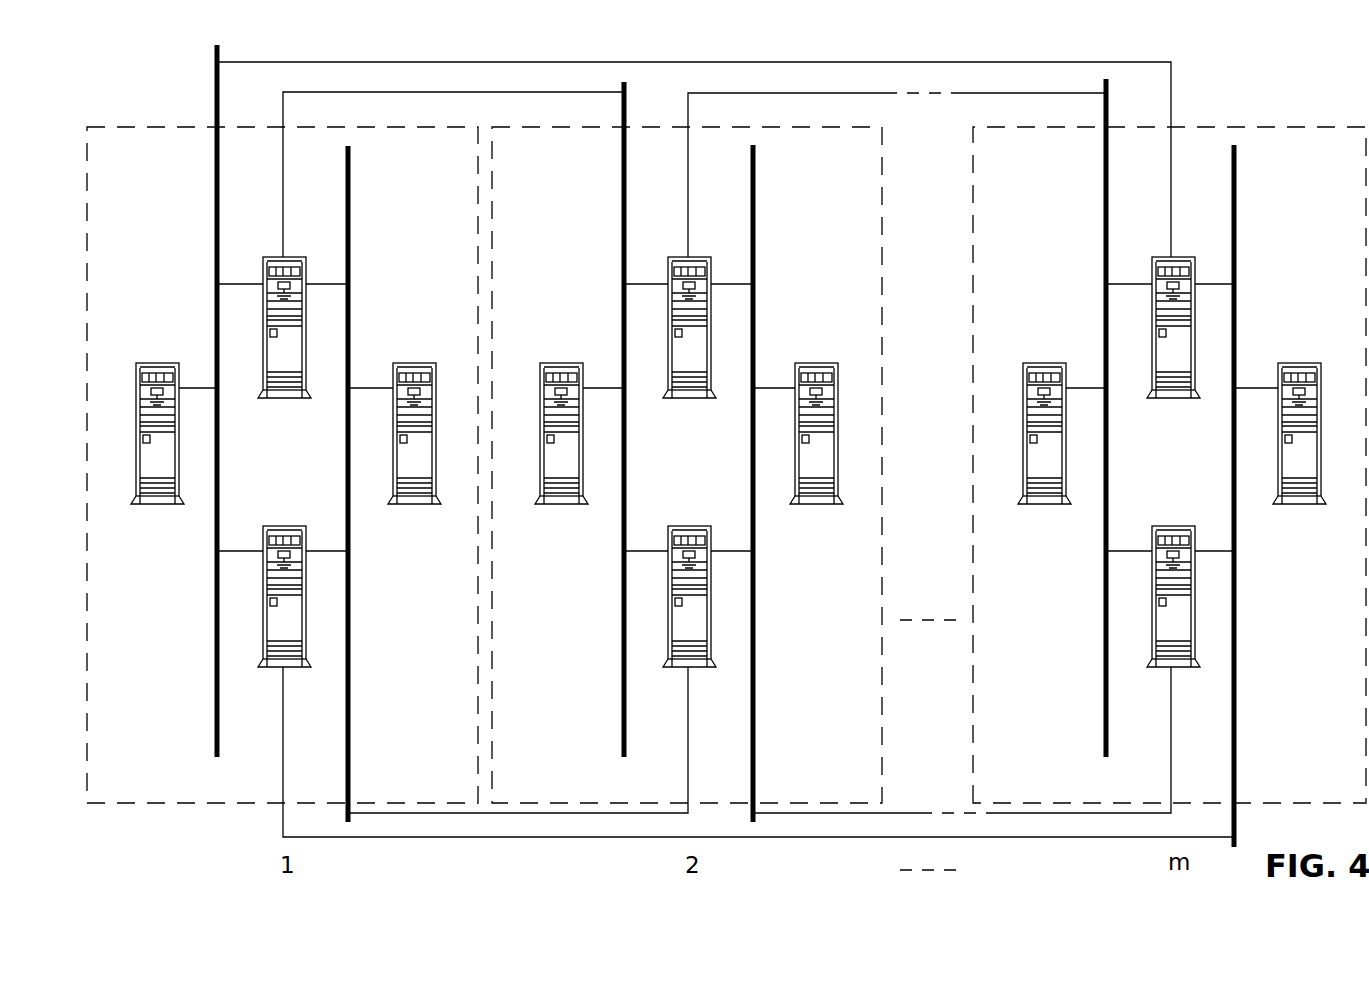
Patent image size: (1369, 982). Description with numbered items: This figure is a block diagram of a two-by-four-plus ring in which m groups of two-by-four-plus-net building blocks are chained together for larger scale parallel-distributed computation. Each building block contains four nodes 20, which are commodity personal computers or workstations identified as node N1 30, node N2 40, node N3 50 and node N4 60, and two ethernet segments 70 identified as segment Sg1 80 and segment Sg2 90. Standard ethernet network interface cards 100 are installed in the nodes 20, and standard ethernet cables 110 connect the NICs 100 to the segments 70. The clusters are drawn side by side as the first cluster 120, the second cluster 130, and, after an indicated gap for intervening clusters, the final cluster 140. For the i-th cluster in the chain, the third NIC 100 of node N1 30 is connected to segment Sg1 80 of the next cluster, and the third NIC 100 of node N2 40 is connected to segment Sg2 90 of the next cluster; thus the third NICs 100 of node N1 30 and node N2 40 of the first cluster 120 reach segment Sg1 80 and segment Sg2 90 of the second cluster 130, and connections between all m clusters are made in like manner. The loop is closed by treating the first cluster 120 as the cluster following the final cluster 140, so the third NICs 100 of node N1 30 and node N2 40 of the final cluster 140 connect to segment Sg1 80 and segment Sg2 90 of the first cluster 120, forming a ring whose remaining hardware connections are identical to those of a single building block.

The node 20 is at (730, 454).
The node N1 30 is at (277, 256).
The node N2 40 is at (262, 670).
The node N3 50 is at (136, 427).
The node N4 60 is at (436, 425).
The ethernet segment 70 is at (729, 446).
The segment Sg1 80 is at (217, 258).
The segment Sg2 90 is at (350, 257).
The network interface card 100 is at (288, 252).
The ethernet cable 110 is at (253, 283).
The first 2×4+net 120 is at (122, 127).
The second 2×4+net 130 is at (660, 125).
The final 2×4+net 140 is at (1205, 125).